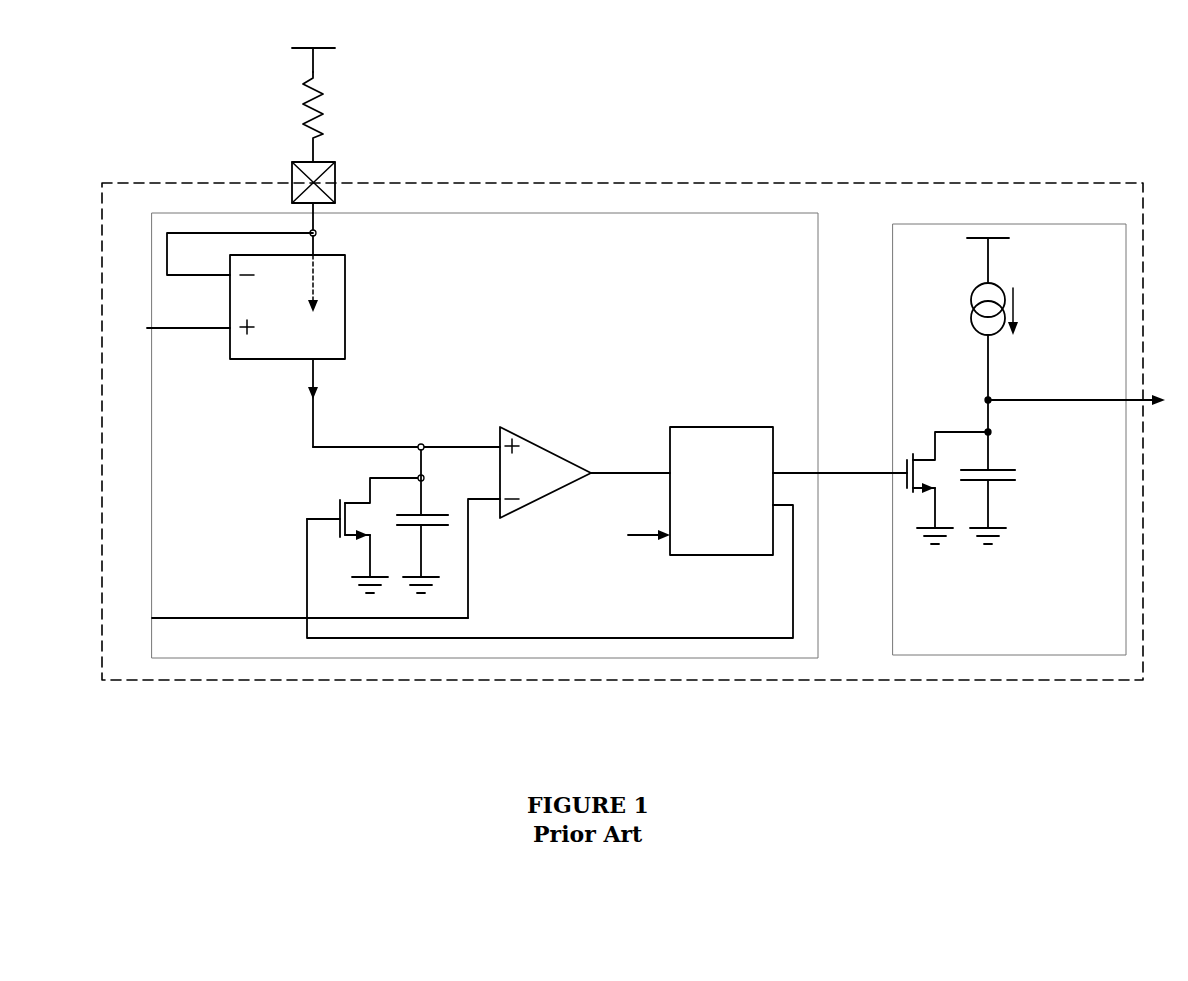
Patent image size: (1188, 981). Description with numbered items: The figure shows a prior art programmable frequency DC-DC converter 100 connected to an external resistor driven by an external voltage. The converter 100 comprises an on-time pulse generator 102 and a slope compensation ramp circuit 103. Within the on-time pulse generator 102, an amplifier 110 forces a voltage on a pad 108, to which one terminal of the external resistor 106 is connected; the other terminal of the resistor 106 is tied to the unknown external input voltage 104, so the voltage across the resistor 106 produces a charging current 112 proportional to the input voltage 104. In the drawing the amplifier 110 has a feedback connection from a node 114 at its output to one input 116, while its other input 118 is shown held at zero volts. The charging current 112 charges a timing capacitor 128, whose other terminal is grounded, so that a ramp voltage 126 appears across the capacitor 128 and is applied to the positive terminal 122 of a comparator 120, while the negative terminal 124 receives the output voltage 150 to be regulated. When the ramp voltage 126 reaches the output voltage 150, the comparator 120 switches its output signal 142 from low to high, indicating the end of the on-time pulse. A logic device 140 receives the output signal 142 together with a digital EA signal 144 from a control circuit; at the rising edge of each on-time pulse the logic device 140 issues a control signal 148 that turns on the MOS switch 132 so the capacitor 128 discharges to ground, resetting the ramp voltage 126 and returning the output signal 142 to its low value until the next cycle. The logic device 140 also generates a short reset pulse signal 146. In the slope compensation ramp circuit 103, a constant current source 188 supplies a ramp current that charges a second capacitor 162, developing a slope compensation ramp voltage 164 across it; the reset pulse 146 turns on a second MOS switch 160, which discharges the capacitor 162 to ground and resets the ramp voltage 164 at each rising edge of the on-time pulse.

The converter 100 is at (957, 90).
The on-time pulse generator 102 is at (780, 213).
The slope compensation ramp circuit 103 is at (921, 224).
The external voltage V_IN 104 is at (300, 46).
The external resistor R_T 106 is at (300, 100).
The pad 108 is at (300, 162).
The amplifier 110 is at (345, 305).
The charging current 112 is at (312, 418).
The node 114 is at (317, 240).
The inverting input of amplifier 116 is at (228, 282).
The non-inverting input of amplifier 118 is at (228, 333).
The comparator 120 is at (525, 434).
The positive terminal 122 is at (498, 450).
The negative terminal 124 is at (498, 497).
The ramp voltage V_R1 126 is at (420, 444).
The capacitor C_1 128 is at (415, 532).
The switch M_1 132 is at (337, 514).
The logic device 140 is at (718, 426).
The output signal t_ON_END 142 is at (630, 429).
The digital EA signal 144 is at (598, 540).
The reset pulse signal RST 146 is at (845, 456).
The control signal t_START 148 is at (692, 614).
The output voltage V_OUT 150 is at (136, 612).
The MOS switch M_2 160 is at (914, 430).
The capacitor C_2 162 is at (998, 463).
The ramp voltage V_RAMP 164 is at (1096, 380).
The constant current source 188 is at (996, 287).